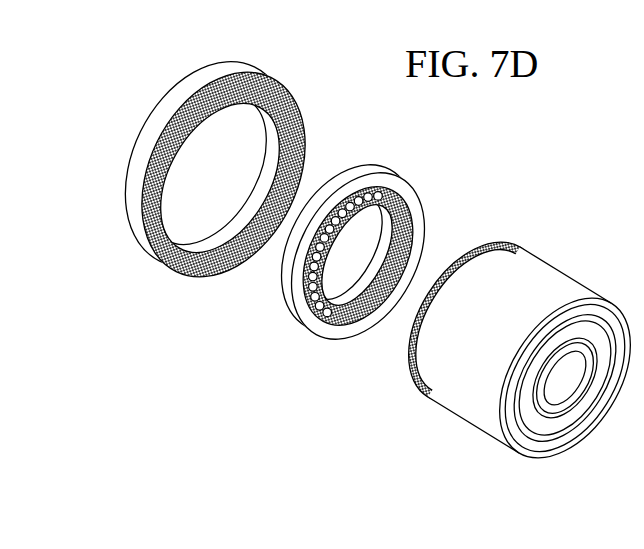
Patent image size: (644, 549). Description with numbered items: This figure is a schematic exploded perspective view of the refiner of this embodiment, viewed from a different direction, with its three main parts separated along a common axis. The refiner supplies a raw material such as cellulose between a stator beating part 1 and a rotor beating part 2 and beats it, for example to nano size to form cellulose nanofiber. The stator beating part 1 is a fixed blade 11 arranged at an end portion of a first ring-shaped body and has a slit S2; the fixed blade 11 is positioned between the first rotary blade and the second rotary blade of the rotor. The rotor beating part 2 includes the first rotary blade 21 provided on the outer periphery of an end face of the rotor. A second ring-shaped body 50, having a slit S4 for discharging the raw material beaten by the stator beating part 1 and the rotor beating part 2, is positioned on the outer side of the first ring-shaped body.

The stator beating part 1 is at (354, 236).
The fixed blade 11 is at (403, 197).
The rotor beating part 2 is at (513, 325).
The first rotary blade 21 is at (537, 285).
The second ring-shaped body 50 is at (217, 169).
The slit S2 is at (292, 302).
The slit S4 is at (295, 100).